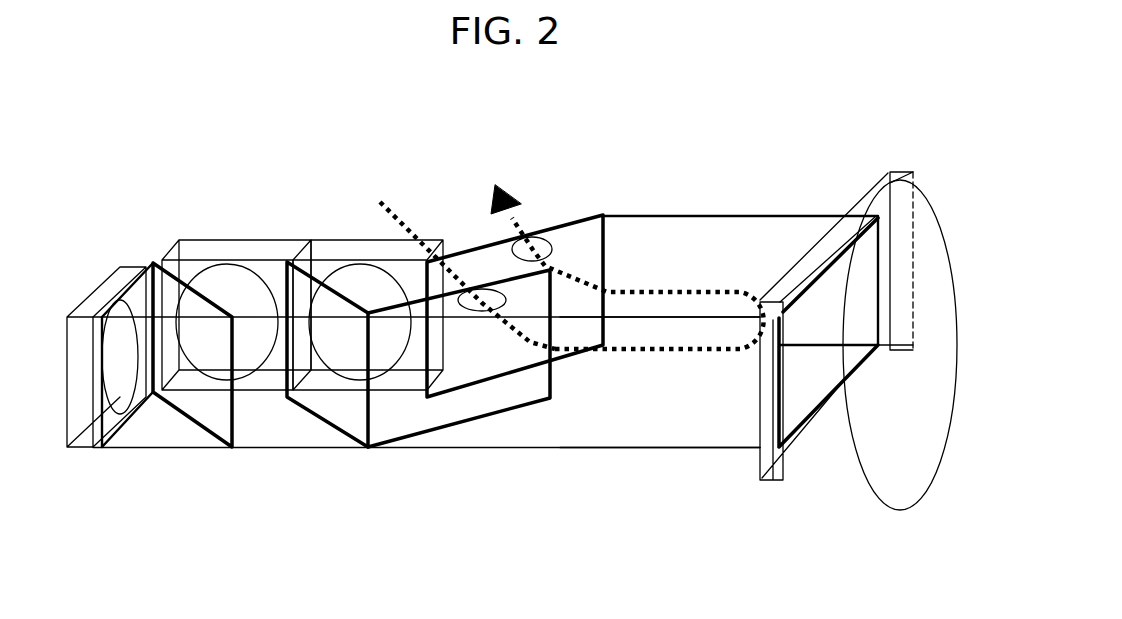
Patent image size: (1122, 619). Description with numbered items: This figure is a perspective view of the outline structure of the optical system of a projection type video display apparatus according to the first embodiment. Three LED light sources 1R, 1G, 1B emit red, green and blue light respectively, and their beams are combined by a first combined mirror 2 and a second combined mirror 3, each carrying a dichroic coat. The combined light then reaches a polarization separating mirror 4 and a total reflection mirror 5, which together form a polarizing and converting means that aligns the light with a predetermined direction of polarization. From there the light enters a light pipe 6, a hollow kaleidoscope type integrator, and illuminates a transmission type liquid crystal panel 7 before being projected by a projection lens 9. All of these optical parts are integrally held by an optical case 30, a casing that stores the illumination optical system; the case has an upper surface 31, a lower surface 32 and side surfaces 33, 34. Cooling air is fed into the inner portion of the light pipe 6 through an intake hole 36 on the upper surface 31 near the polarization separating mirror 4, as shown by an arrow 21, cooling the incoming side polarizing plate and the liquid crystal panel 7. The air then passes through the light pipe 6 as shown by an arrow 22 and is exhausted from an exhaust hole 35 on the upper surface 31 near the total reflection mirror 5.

The LED light source 1B is at (92, 300).
The LED light source 1G is at (243, 255).
The LED light source 1R is at (347, 250).
The first combined mirror 2 is at (202, 427).
The second combined mirror 3 is at (335, 430).
The polarization separating mirror 4 is at (465, 418).
The total reflection mirror 5 is at (555, 228).
The light pipe 6 is at (792, 393).
The transmission type liquid crystal panel 7 is at (770, 482).
The projection lens 9 is at (928, 222).
The arrow 21 is at (412, 232).
The arrow 22 is at (507, 180).
The optical case 30 is at (270, 447).
The upper surface 31 is at (687, 237).
The lower surface 32 is at (680, 452).
The side surface 33 is at (762, 248).
The side surface 34 is at (645, 418).
The exhaust hole 35 is at (555, 238).
The intake hole 36 is at (472, 307).